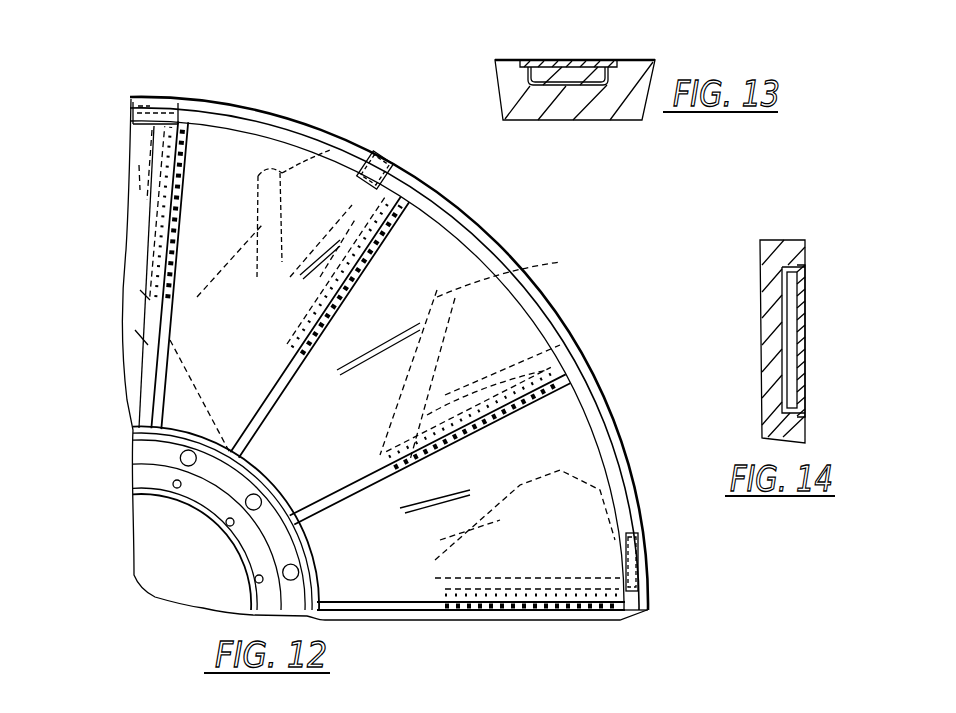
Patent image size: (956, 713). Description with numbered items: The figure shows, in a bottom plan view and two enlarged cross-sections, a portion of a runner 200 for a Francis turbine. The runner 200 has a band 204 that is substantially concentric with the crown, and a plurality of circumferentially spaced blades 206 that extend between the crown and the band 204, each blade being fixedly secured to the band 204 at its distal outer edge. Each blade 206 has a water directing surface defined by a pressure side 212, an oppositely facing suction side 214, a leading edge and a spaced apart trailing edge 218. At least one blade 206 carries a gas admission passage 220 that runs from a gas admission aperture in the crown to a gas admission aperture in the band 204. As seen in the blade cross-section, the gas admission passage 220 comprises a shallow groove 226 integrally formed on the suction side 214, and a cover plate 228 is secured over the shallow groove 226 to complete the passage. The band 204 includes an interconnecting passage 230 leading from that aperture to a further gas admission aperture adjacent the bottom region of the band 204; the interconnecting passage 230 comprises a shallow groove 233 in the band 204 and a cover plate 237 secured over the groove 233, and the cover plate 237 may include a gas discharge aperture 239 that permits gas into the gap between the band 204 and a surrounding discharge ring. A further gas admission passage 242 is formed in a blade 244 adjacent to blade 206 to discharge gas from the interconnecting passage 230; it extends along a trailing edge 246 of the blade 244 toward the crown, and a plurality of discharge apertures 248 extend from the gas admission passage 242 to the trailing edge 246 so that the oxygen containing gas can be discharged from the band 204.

In FIG. 12, the runner 200 is at (114, 410).
In FIG. 12, the band 204 is at (523, 271).
In FIG. 14, the band 204 is at (783, 250).
In FIG. 12, the blade 206 is at (478, 244).
In FIG. 13, the pressure side 212 is at (622, 120).
In FIG. 12, the suction side 214 is at (240, 166).
In FIG. 13, the suction side 214 is at (633, 60).
In FIG. 12, the trailing edge 218 is at (165, 322).
In FIG. 12, the gas admission passage 220 is at (380, 163).
In FIG. 13, the gas admission passage 220 is at (545, 78).
In FIG. 13, the shallow groove 226 is at (585, 72).
In FIG. 13, the cover plate 228 is at (525, 62).
In FIG. 12, the interconnecting passage 230 is at (352, 157).
In FIG. 14, the interconnecting passage 230 is at (790, 281).
In FIG. 14, the shallow groove 233 is at (780, 390).
In FIG. 12, the cover plate 237 is at (560, 304).
In FIG. 14, the cover plate 237 is at (806, 354).
In FIG. 12, the gas discharge aperture 239 is at (562, 330).
In FIG. 14, the gas discharge aperture 239 is at (800, 340).
In FIG. 12, the gas admission passage 242 is at (397, 180).
In FIG. 12, the blade 244 is at (281, 150).
In FIG. 12, the trailing edge 246 is at (405, 208).
In FIG. 12, the discharge apertures 248 is at (340, 310).